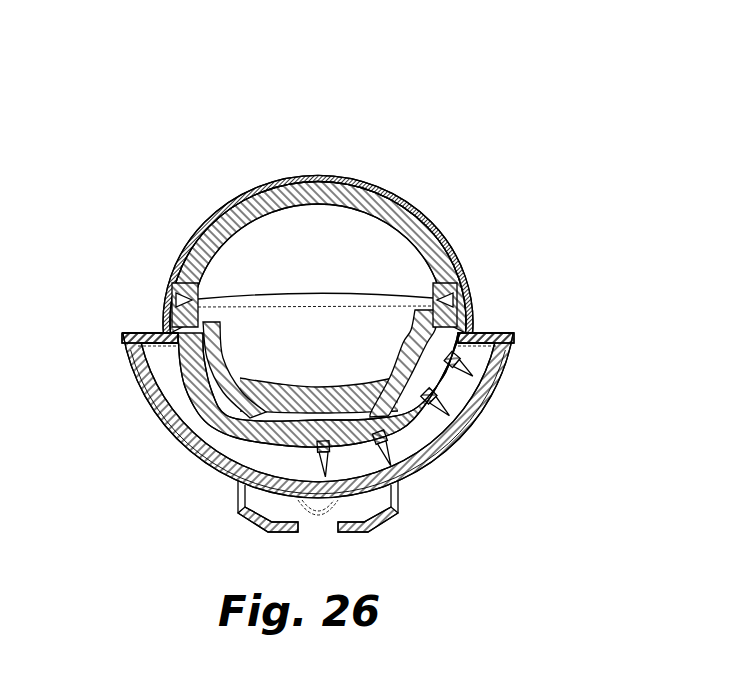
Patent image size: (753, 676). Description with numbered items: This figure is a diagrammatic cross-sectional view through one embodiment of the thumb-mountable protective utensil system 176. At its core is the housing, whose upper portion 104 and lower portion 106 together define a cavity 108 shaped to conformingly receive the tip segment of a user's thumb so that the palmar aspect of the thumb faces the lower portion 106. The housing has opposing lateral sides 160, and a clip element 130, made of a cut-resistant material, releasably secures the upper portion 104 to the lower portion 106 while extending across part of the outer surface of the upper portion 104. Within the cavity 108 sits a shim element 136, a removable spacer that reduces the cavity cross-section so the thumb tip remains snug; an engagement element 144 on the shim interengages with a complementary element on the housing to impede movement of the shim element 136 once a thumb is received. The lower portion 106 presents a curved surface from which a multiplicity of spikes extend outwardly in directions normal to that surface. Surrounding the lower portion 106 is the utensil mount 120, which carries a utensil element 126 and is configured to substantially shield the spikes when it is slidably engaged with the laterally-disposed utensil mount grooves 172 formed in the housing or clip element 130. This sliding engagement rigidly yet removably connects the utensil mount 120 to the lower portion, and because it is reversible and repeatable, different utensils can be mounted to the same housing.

The thumb-mountable protective utensil system 176 is at (356, 229).
The clip element 130 is at (232, 202).
The upper portion 104 is at (363, 203).
The cavity 108 is at (342, 259).
The utensil mount grooves 172 is at (196, 328).
The lateral sides 160 is at (130, 302).
The engagement element 144 is at (372, 415).
The shim element 136 is at (418, 346).
The lower portion 106 is at (212, 397).
The utensil mount 120 is at (318, 398).
The utensil element 126 is at (426, 531).